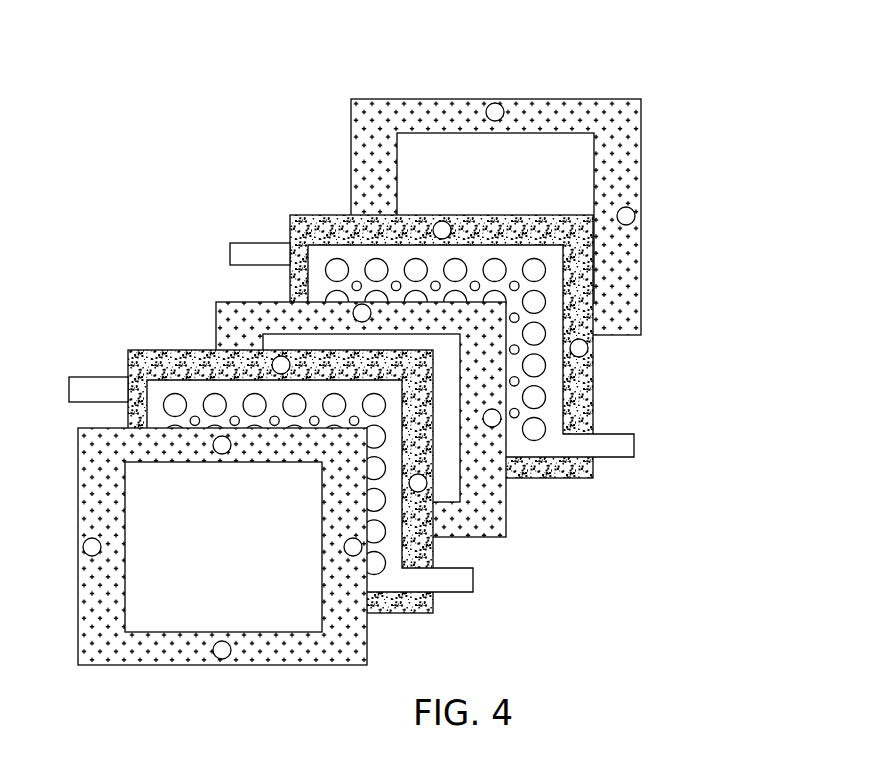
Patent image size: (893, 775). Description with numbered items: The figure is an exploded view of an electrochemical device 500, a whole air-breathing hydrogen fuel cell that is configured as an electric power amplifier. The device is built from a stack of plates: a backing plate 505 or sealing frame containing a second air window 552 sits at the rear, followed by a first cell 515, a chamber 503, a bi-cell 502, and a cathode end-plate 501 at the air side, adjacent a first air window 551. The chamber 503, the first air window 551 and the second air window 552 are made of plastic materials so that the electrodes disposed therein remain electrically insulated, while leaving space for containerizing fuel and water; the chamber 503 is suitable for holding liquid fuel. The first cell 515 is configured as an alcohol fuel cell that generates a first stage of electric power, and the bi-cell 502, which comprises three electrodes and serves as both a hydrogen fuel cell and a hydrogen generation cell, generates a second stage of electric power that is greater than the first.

The electrochemical device 500 is at (407, 349).
The backing plate 505 is at (548, 217).
The second air window 552 is at (512, 180).
The first cell 515 is at (605, 397).
The chamber 503 is at (517, 519).
The bi-cell 502 is at (487, 578).
The cathode end-plate 501 is at (272, 546).
The first air window 551 is at (243, 556).